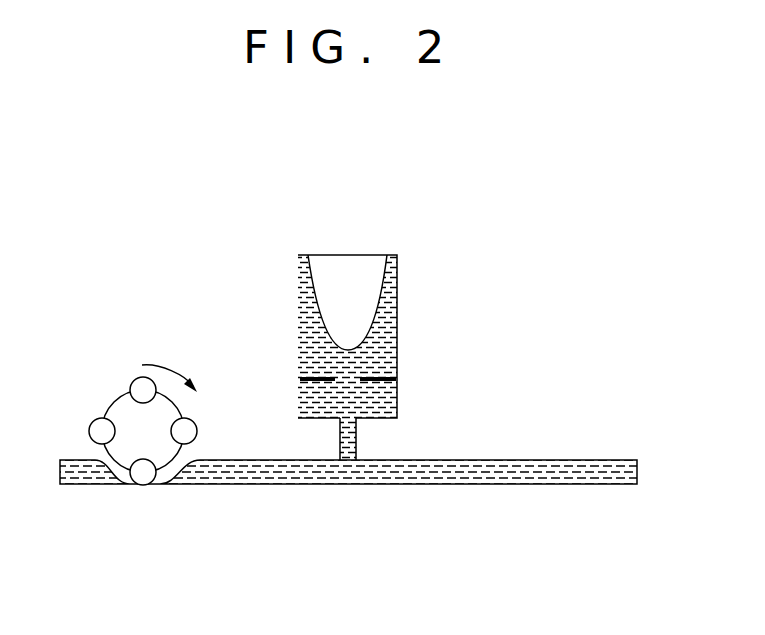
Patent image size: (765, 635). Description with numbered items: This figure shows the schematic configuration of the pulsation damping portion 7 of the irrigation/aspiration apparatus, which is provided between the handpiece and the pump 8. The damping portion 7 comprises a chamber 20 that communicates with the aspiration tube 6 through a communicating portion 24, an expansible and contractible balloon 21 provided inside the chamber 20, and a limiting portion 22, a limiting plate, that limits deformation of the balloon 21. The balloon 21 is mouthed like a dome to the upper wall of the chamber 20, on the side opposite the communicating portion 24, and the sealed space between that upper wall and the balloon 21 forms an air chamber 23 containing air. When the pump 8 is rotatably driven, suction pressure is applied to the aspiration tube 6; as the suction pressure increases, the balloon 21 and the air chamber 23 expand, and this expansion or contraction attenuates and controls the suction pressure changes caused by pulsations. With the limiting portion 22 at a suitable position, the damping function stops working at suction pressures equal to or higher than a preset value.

The aspiration tube 6 is at (569, 473).
The pulsation damping portion 7 is at (357, 302).
The pump 8 is at (113, 380).
The chamber 20 is at (397, 304).
The balloon 21 is at (318, 312).
The limiting portion 22 is at (370, 390).
The air chamber 23 is at (357, 272).
The communicating portion 24 is at (337, 443).